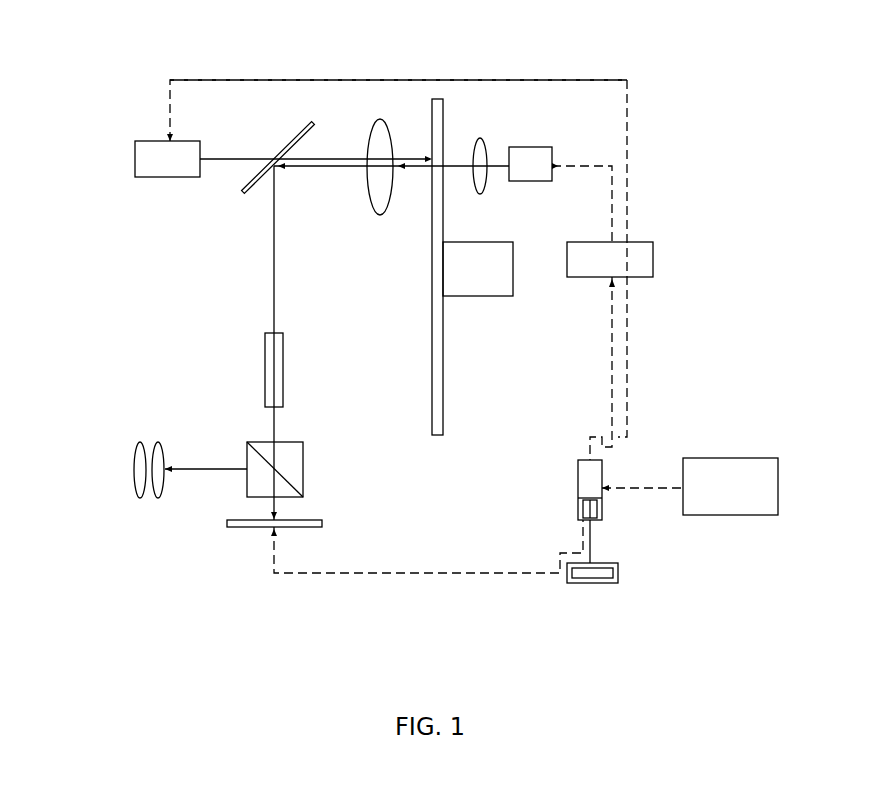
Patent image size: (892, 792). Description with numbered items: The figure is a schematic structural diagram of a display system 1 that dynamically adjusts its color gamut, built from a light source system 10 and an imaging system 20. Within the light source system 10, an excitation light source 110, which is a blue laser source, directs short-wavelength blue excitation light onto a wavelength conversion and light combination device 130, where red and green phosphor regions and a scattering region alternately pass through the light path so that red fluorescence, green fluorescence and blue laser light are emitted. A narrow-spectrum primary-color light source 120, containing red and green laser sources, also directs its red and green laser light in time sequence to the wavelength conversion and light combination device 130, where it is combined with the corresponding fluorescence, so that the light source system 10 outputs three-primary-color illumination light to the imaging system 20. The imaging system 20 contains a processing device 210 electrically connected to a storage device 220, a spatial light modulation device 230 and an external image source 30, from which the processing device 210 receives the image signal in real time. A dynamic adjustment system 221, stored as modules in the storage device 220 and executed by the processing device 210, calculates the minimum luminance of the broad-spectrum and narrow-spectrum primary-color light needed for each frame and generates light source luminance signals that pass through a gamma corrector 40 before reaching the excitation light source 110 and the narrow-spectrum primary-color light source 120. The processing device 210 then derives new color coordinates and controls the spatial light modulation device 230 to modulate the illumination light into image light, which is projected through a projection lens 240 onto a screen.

The display system 1 is at (398, 44).
The light source system 10 is at (662, 213).
The imaging system 20 is at (217, 407).
The image source 30 is at (712, 455).
The gamma corrector 40 is at (653, 258).
The excitation light source 110 is at (190, 141).
The narrow-spectrum primary-color light source 120 is at (530, 147).
The wavelength conversion and light combination device 130 is at (443, 110).
The processing device 210 is at (578, 470).
The storage device 220 is at (618, 570).
The dynamic adjustment system 221 is at (595, 572).
The spatial light modulation device 230 is at (310, 520).
The projection lens 240 is at (150, 432).